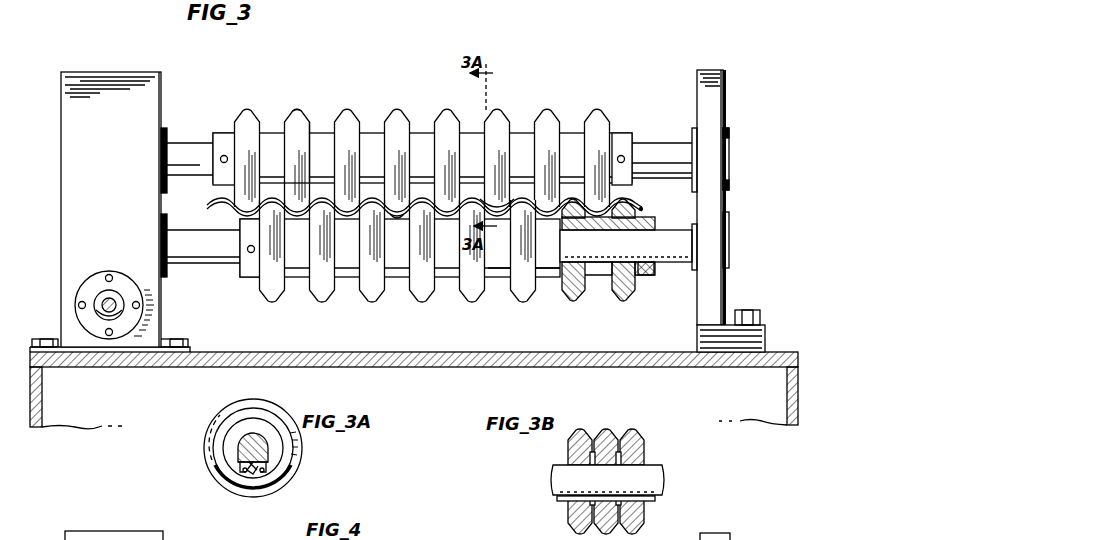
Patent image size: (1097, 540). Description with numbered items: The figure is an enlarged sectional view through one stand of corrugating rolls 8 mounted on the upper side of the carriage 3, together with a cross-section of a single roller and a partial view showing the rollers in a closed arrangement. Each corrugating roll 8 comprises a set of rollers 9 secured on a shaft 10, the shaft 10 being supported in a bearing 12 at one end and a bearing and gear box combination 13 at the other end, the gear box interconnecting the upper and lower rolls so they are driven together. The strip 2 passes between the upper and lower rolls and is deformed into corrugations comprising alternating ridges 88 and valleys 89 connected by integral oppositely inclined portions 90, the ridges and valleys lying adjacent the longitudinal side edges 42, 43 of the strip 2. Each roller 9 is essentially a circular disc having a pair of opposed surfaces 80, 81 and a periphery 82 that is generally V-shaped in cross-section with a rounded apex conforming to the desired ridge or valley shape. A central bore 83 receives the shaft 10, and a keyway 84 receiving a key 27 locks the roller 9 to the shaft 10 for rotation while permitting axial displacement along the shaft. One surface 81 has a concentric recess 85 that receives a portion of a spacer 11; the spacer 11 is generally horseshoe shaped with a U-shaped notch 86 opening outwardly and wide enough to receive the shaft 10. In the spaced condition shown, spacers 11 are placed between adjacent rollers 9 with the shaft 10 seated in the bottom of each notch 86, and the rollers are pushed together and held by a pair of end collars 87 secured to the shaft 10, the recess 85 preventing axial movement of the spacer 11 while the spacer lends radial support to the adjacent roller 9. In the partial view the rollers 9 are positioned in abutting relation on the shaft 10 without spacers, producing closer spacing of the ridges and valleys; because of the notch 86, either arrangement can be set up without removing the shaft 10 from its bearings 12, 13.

In FIG. 3, the strip 2 is at (641, 207).
In FIG. 3, the carriage 3 is at (146, 369).
In FIG. 3, the corrugating rolls 8 is at (348, 106).
In FIG. 3, the rollers 9 is at (251, 113).
In FIG. 3A, the rollers 9 is at (205, 437).
In FIG. 3B, the rollers 9 is at (634, 432).
In FIG. 3, the shaft 10 is at (668, 146).
In FIG. 3A, the shaft 10 is at (245, 445).
In FIG. 3B, the shaft 10 is at (655, 463).
In FIG. 3, the spacers 11 is at (563, 227).
In FIG. 3A, the spacers 11 is at (258, 425).
In FIG. 3, the bearings 12 is at (714, 98).
In FIG. 3, the bearing and gear box combination 13 is at (118, 137).
In FIG. 3A, the key 27 is at (255, 472).
In FIG. 3B, the key 27 is at (660, 501).
In FIG. 3, the longitudinal side edge 42 is at (210, 204).
In FIG. 3, the longitudinal side edge 43 is at (645, 206).
In FIG. 3, the opposed surface 80 is at (290, 131).
In FIG. 3B, the opposed surface 80 is at (570, 508).
In FIG. 3, the opposed surface 81 is at (312, 127).
In FIG. 3A, the opposed surface 81 is at (290, 447).
In FIG. 3B, the opposed surface 81 is at (646, 516).
In FIG. 3, the periphery 82 is at (297, 121).
In FIG. 3A, the periphery 82 is at (225, 405).
In FIG. 3B, the periphery 82 is at (584, 432).
In FIG. 3, the central bore 83 is at (620, 233).
In FIG. 3B, the central bore 83 is at (568, 470).
In FIG. 3A, the keyway 84 is at (240, 462).
In FIG. 3A, the concentric recess 85 is at (292, 470).
In FIG. 3B, the concentric recess 85 is at (582, 510).
In FIG. 3, the U-shaped notch 86 is at (590, 285).
In FIG. 3A, the U-shaped notch 86 is at (243, 481).
In FIG. 3, the end collars 87 is at (622, 132).
In FIG. 3, the ridges 88 is at (423, 197).
In FIG. 3, the valleys 89 is at (398, 217).
In FIG. 3, the oppositely inclined portions 90 is at (487, 200).